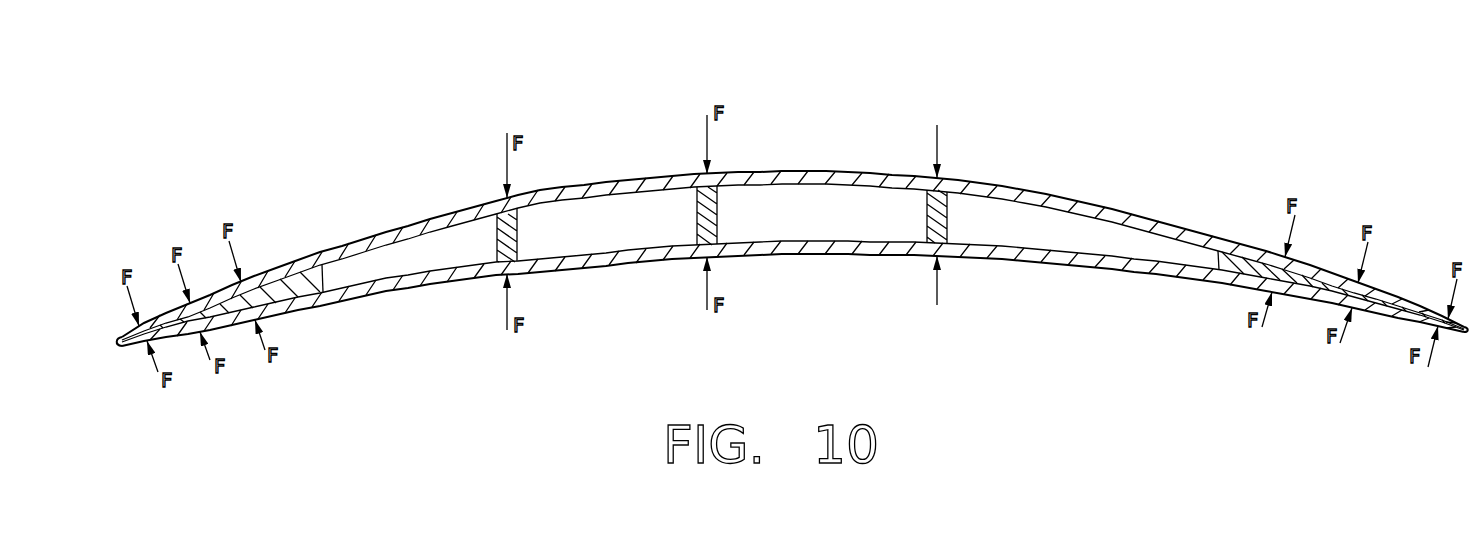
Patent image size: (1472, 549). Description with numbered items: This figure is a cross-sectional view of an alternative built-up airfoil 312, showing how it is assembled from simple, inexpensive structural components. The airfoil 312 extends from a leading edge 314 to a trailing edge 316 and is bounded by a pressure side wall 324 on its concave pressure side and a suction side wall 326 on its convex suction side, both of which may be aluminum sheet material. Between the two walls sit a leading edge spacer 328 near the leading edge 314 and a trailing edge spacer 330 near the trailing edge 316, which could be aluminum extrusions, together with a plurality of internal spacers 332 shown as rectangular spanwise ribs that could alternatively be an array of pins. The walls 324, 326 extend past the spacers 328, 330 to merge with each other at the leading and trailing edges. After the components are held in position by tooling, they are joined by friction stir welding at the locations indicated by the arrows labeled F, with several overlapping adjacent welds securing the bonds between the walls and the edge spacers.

The airfoil 312 is at (1163, 80).
The leading edge 314 is at (123, 338).
The trailing edge 316 is at (1468, 338).
The pressure side wall 324 is at (448, 276).
The suction side wall 326 is at (793, 180).
The leading edge spacer 328 is at (297, 285).
The trailing edge spacer 330 is at (1236, 261).
The internal spacers 332 is at (703, 213).